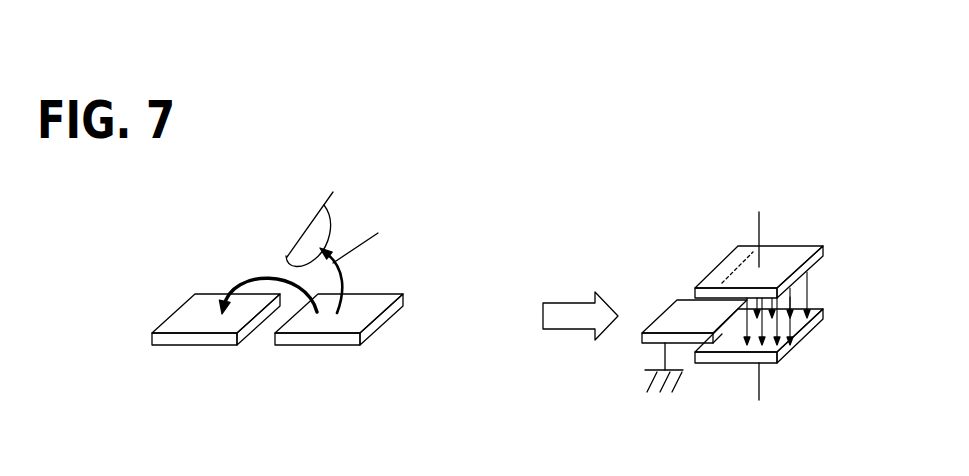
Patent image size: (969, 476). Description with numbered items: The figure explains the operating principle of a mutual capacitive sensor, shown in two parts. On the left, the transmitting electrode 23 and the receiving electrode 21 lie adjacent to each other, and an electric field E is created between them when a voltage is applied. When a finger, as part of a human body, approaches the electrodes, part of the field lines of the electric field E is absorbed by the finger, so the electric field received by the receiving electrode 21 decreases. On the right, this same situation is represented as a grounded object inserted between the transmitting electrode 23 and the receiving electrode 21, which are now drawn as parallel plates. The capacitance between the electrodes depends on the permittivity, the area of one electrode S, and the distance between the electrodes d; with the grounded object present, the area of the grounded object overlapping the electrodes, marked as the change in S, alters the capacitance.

The receiving electrode 21 is at (178, 309).
The transmitting electrode 23 is at (387, 293).
The electric field E is at (254, 279).
The area of one electrode S is at (685, 231).
The distance between the electrodes d is at (837, 262).